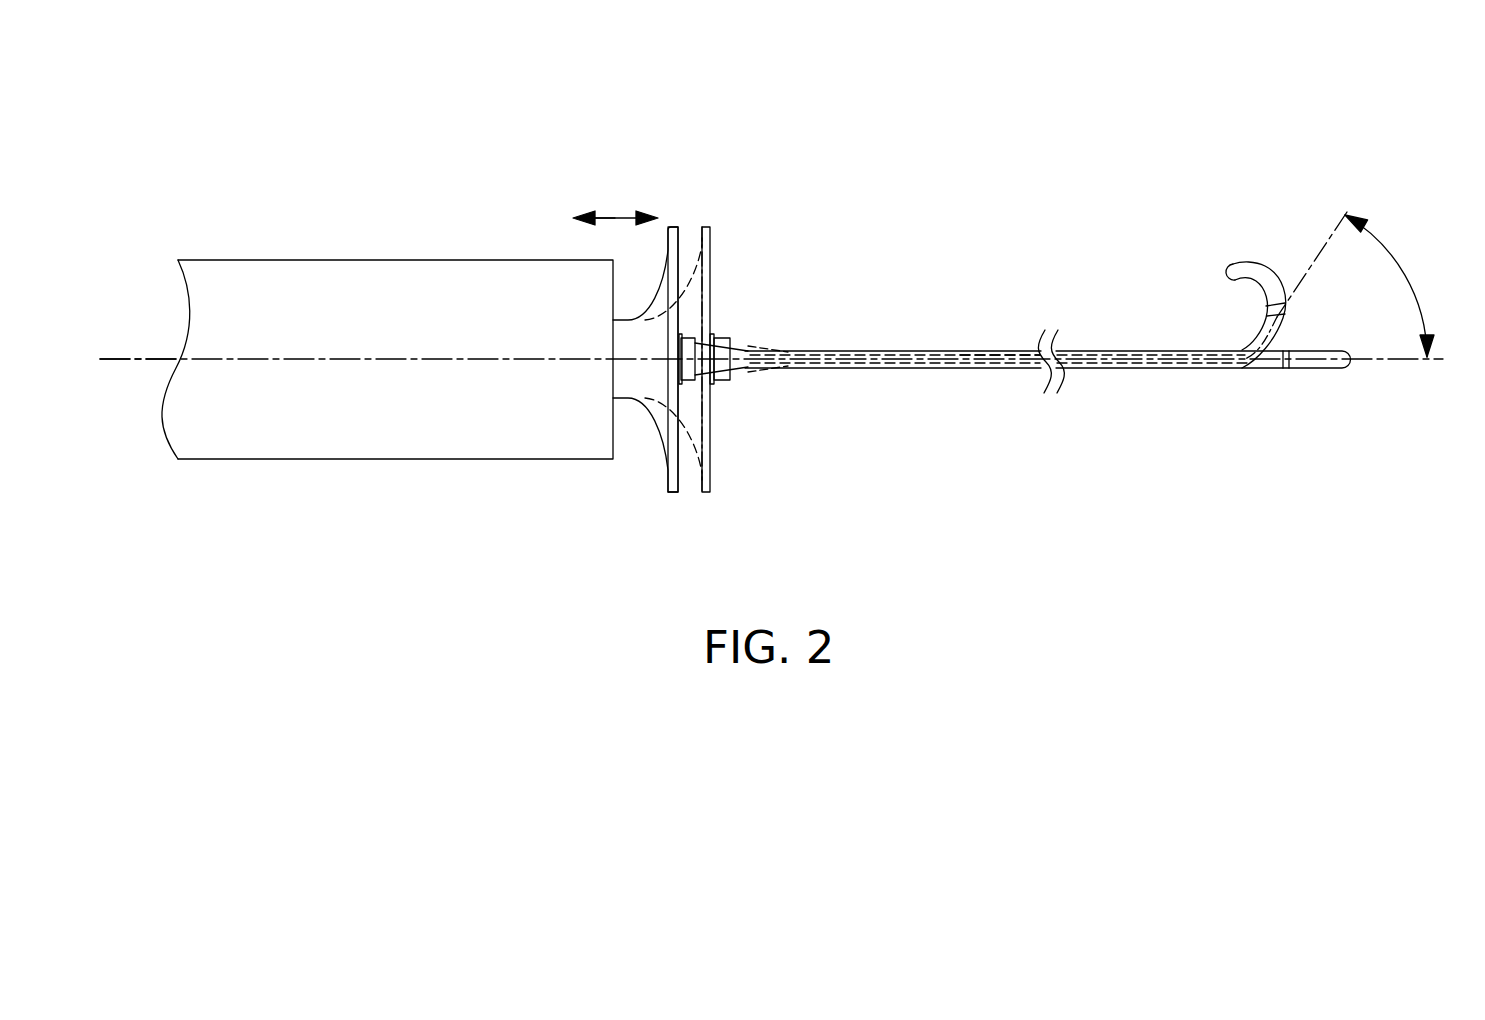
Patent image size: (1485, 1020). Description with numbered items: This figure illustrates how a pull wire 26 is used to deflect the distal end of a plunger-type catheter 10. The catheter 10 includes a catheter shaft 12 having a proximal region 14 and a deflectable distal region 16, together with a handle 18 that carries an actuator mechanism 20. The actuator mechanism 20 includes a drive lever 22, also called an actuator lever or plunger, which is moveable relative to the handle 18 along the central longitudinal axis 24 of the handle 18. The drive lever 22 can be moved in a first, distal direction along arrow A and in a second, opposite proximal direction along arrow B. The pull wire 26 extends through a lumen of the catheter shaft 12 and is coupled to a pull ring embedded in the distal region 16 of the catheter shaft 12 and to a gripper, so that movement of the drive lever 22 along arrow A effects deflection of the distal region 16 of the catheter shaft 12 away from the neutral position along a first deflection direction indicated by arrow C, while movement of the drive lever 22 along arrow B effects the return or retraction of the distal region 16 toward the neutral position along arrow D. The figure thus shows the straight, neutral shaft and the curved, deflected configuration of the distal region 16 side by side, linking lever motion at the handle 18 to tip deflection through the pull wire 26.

The plunger-type catheter 10 is at (238, 149).
The catheter shaft 12 is at (1157, 369).
The proximal region 14 is at (746, 344).
The deflectable distal region 16 is at (1222, 258).
The handle 18 is at (253, 460).
The actuator mechanism 20 is at (697, 488).
The drive lever 22 is at (668, 237).
The central longitudinal axis 24 is at (125, 360).
The pull wire 26 is at (991, 350).
The first direction A is at (617, 205).
The second direction B is at (590, 202).
The first deflection direction C is at (1355, 265).
The return direction D is at (784, 353).